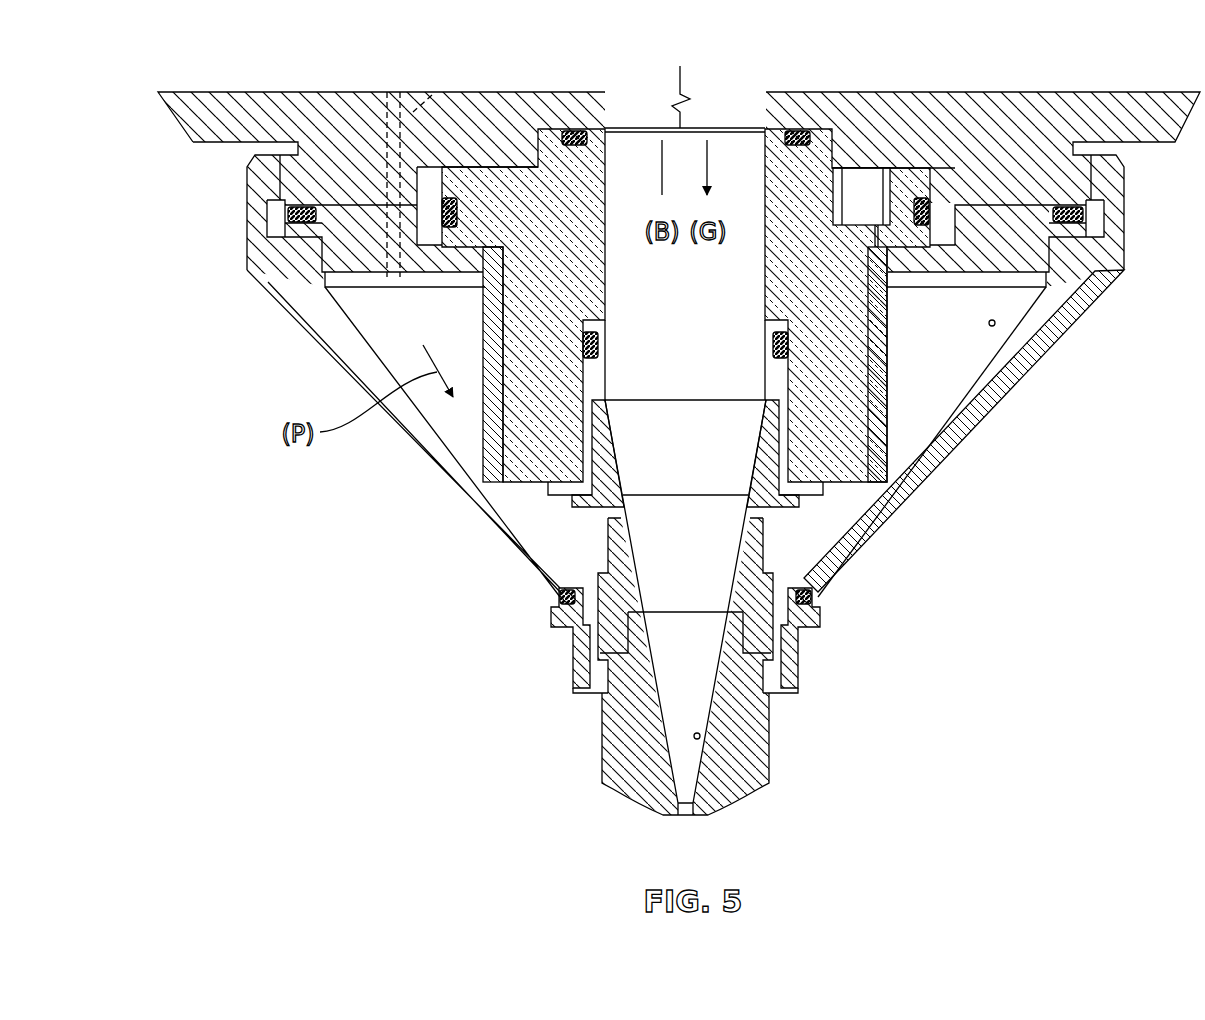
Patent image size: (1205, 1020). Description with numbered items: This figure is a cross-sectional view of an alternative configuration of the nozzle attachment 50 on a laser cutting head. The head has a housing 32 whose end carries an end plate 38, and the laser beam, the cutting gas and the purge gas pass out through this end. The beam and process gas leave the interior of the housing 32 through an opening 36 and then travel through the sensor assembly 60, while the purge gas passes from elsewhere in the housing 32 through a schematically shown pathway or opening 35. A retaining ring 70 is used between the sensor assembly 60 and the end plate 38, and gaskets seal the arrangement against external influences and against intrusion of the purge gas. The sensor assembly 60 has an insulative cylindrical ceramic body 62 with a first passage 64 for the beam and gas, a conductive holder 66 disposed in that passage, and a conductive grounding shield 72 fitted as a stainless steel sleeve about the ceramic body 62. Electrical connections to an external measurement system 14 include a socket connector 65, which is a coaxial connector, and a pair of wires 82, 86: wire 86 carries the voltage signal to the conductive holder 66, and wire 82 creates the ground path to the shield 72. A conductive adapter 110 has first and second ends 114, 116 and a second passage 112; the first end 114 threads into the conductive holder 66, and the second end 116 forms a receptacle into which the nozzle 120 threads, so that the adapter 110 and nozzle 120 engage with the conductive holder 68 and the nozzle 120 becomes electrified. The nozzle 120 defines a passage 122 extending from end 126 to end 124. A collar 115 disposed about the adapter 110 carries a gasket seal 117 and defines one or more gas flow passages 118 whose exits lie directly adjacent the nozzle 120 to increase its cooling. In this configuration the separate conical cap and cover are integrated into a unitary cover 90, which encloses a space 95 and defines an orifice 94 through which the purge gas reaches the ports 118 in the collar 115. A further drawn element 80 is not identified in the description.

The external measurement system 14 is at (946, 64).
The housing 32 is at (216, 140).
The pathway or opening 35 is at (433, 88).
The opening 36 is at (757, 95).
The end plate 38 is at (1120, 170).
The nozzle attachment 50 is at (968, 586).
The sensor assembly 60 is at (803, 100).
The ceramic body 62 is at (498, 182).
The first passage 64 is at (605, 165).
The socket connector 65 is at (876, 168).
The conductive holder 66 is at (880, 535).
The conductive holder 68 is at (600, 338).
The retaining ring 70 is at (372, 210).
The conductive grounding shield 72 is at (484, 333).
The sensor lead 80 is at (792, 390).
The wire 82 is at (937, 207).
The wire 86 is at (830, 303).
The unitary cover 90 is at (1003, 403).
The orifice 94 is at (915, 465).
The space 95 is at (995, 326).
The conductive adapter 110 is at (845, 578).
The second passage 112 is at (705, 458).
The first end 114 is at (790, 440).
The left retaining nut 115 is at (560, 655).
The second end 116 is at (797, 628).
The gasket seal 117 is at (552, 602).
The gas flow passages 118 is at (628, 640).
The nozzle 120 is at (602, 748).
The passage 122 is at (700, 738).
The end 124 is at (684, 815).
The end 126 is at (798, 670).